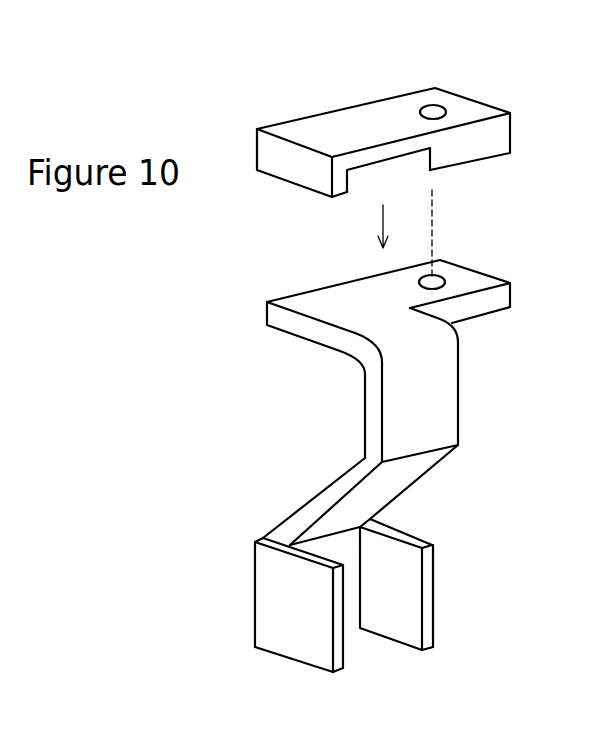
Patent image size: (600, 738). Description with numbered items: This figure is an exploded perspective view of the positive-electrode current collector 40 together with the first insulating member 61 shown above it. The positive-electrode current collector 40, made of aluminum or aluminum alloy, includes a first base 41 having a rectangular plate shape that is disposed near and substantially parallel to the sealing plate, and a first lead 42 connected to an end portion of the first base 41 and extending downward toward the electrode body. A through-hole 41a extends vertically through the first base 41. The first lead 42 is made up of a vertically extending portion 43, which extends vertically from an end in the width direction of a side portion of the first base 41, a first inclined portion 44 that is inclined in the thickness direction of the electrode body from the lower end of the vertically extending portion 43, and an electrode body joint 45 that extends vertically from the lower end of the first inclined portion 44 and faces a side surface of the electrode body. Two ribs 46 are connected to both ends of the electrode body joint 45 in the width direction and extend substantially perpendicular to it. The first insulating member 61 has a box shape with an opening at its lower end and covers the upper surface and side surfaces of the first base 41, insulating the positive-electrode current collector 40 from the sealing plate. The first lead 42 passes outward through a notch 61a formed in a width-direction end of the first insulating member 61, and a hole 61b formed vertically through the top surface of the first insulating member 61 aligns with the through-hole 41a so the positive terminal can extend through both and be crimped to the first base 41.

The positive-electrode current collector 40 is at (404, 445).
The first base 41 is at (410, 267).
The through-hole 41a is at (440, 280).
The first lead 42 is at (440, 367).
The vertically extending portion 43 is at (428, 415).
The first inclined portion 44 is at (392, 485).
The electrode body joint 45 is at (348, 618).
The ribs 46 is at (400, 585).
The first insulating member 61 is at (400, 133).
The notch 61a is at (352, 181).
The hole 61b is at (433, 110).